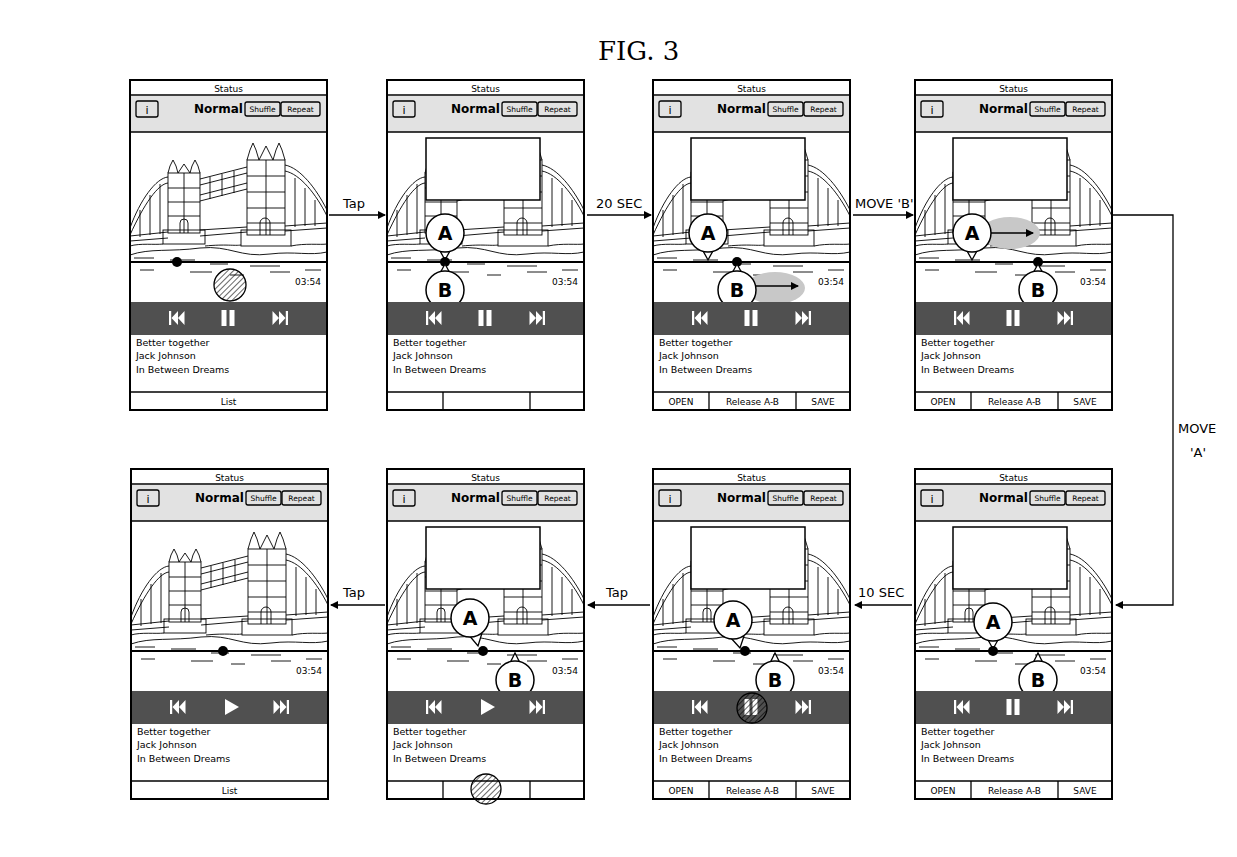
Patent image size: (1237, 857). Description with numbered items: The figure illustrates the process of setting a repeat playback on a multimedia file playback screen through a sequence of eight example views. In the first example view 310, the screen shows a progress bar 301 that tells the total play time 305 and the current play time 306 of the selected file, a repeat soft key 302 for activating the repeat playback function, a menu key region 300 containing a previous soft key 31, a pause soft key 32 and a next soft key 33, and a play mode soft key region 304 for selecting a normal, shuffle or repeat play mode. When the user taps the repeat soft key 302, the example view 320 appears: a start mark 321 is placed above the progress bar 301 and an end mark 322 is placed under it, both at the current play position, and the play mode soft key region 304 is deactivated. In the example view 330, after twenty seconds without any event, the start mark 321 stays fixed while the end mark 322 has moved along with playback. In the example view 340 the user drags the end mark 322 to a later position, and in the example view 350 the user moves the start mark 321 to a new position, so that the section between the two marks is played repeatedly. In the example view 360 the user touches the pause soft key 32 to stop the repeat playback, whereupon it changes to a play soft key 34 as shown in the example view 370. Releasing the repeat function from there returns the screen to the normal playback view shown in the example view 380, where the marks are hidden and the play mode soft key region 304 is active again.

The menu key region 300 is at (328, 302).
The progress bar 301 is at (132, 262).
The repeat soft key 302 is at (226, 270).
The play mode soft key region 304 is at (328, 95).
The total play time 305 is at (318, 276).
The current play time 306 is at (131, 283).
The previous soft key 31 is at (170, 315).
The pause soft key 32 is at (232, 334).
The next soft key 33 is at (286, 323).
The play soft key 34 is at (478, 702).
The example view 310 is at (235, 76).
The example view 320 is at (495, 76).
The start mark 321 is at (464, 234).
The end mark 322 is at (464, 288).
The example view 330 is at (760, 76).
The example view 340 is at (1022, 76).
The example view 350 is at (1120, 466).
The example view 360 is at (855, 466).
The example view 370 is at (590, 466).
The example view 380 is at (334, 466).